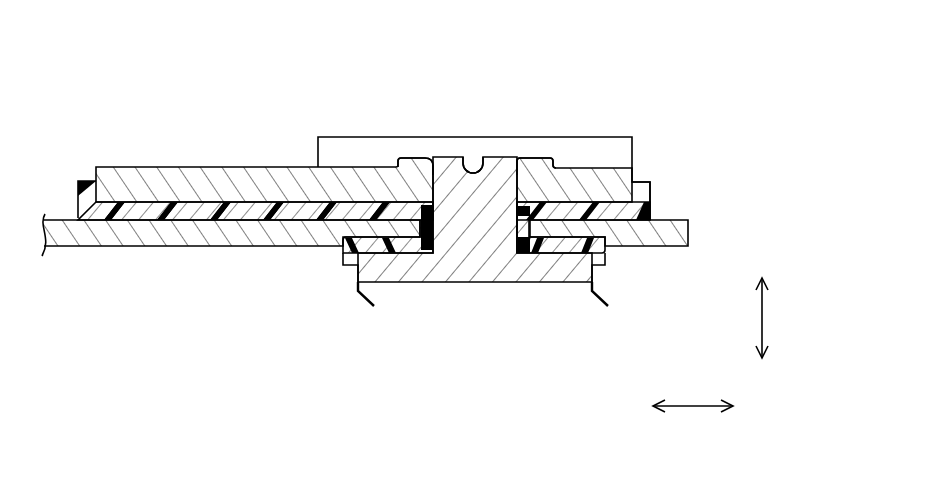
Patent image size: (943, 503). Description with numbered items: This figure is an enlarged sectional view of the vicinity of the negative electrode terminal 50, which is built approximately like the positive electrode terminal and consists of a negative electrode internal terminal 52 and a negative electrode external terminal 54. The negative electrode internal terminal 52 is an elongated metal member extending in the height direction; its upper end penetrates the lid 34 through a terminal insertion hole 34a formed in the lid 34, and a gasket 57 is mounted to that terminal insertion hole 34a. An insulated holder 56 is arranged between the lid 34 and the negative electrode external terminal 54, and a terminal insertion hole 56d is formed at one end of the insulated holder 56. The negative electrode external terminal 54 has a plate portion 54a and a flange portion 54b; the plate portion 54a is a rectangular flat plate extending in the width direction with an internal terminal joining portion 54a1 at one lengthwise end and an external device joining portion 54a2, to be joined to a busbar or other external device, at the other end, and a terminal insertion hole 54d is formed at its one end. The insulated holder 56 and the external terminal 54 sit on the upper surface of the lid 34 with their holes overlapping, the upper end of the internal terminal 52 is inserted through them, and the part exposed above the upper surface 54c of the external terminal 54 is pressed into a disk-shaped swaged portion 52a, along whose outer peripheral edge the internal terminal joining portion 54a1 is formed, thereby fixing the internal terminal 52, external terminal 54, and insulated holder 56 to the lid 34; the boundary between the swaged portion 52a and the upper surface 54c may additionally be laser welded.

The negative electrode terminal 50 is at (618, 68).
The lid 34 is at (683, 220).
The terminal insertion hole 34a is at (528, 228).
The negative electrode internal terminal 52 is at (362, 270).
The swaged portion 52a is at (498, 157).
The gasket 57 is at (606, 252).
The negative electrode external terminal 54 is at (123, 167).
The plate portion 54a is at (165, 167).
The internal terminal joining portion 54a1 is at (462, 122).
The external device joining portion 54a2 is at (247, 155).
The flange portion 54b is at (340, 150).
The upper surface of the negative electrode external terminal 54c is at (407, 160).
The terminal insertion hole 54d is at (510, 182).
The insulated holder 56 is at (642, 182).
The terminal insertion hole 56d is at (515, 208).